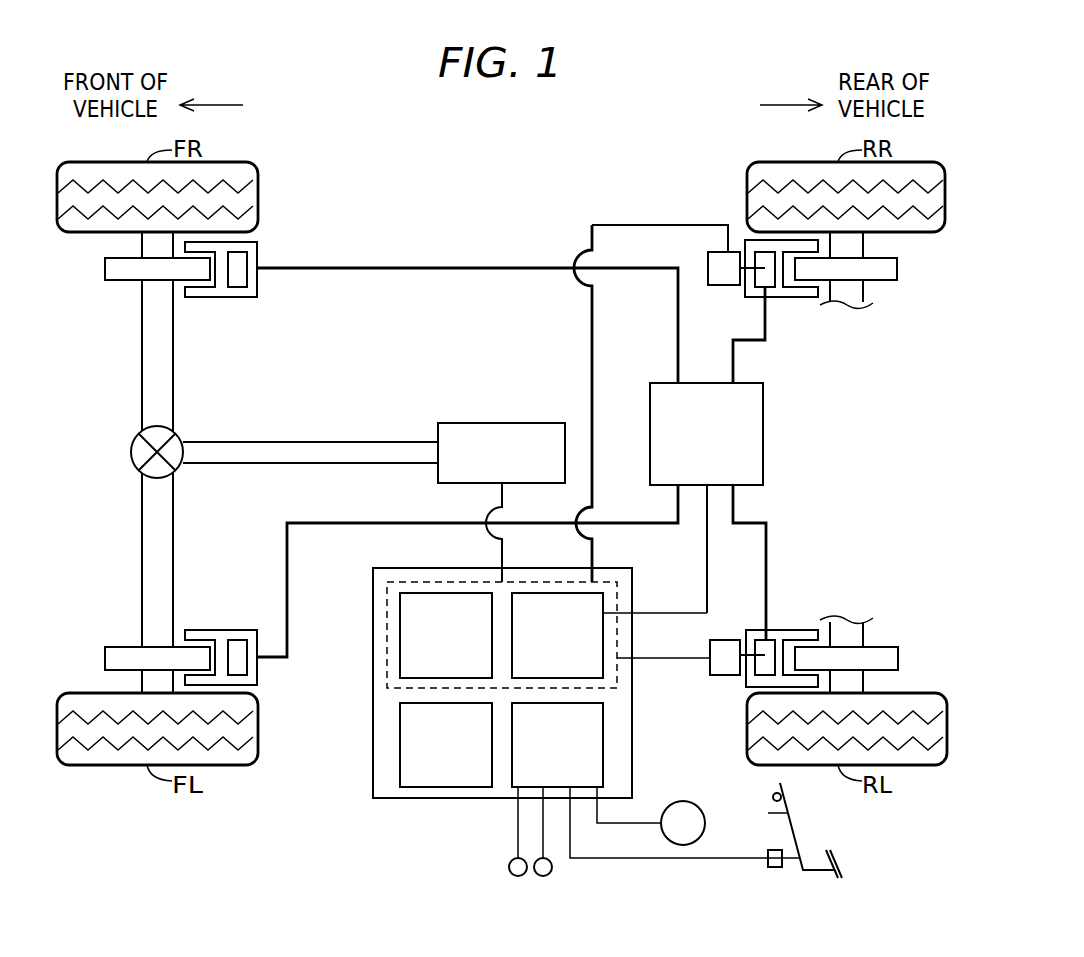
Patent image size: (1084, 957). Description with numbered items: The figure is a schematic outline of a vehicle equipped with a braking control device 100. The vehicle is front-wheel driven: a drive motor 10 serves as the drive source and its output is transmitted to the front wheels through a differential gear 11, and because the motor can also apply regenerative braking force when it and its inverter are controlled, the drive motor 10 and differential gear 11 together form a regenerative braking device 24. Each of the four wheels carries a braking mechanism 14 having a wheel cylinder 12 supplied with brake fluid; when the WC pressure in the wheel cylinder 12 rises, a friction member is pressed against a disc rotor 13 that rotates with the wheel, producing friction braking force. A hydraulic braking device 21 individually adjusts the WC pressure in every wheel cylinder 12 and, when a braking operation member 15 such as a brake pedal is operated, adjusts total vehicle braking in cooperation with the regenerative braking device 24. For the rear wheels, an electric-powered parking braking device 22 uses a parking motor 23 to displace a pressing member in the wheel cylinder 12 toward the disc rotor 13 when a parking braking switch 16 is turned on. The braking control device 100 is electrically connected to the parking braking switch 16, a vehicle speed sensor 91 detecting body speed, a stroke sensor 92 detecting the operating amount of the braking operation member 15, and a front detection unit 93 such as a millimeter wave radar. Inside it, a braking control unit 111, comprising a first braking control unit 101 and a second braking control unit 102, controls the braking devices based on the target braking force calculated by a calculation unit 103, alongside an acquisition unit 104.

The drive motor 10 is at (501, 485).
The differential gear 11 is at (130, 452).
The wheel cylinder 12 is at (500, 463).
The disc rotor 13 is at (501, 465).
The braking mechanism 14 is at (525, 463).
The braking operation member 15 is at (834, 836).
The parking braking switch 16 is at (683, 823).
The hydraulic braking device 21 is at (706, 434).
The parking braking device 22 is at (660, 458).
The parking motor 23 is at (706, 456).
The regenerative braking device 24 is at (455, 367).
The vehicle speed sensor 91 is at (512, 896).
The stroke sensor 92 is at (771, 888).
The front detection unit 93 is at (548, 896).
The braking control device 100 is at (537, 711).
The first braking control unit 101 is at (446, 635).
The second braking control unit 102 is at (557, 635).
The calculation unit 103 is at (446, 745).
The acquisition unit 104 is at (656, 780).
The braking control unit 111 is at (457, 635).